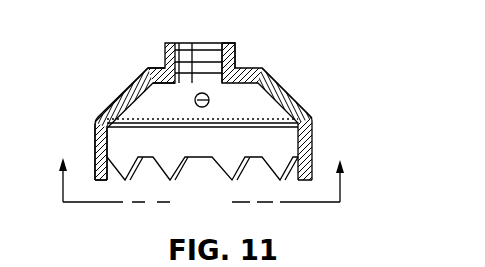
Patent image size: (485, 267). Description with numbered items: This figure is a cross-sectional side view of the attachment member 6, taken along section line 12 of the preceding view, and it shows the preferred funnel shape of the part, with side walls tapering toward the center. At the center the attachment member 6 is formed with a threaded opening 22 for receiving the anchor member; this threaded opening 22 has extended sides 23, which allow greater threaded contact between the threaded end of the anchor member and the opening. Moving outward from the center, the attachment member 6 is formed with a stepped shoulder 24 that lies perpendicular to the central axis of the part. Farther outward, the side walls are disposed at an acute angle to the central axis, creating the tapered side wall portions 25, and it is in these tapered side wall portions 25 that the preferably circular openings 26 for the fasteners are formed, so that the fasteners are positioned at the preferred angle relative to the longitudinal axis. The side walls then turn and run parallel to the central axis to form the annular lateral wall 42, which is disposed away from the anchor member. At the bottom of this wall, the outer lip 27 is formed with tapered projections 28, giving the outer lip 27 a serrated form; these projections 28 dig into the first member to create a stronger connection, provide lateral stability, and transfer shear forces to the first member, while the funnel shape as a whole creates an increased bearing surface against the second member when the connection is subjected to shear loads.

The attachment member 6 is at (313, 110).
The section line 12 is at (199, 201).
The threaded opening 22 is at (208, 53).
The extended sides 23 is at (235, 52).
The stepped shoulder 24 is at (147, 70).
The tapered side wall portions 25 is at (128, 117).
The openings 26 is at (119, 94).
The outer lip 27 is at (107, 183).
The projections 28 is at (178, 164).
The lateral wall 42 is at (94, 138).